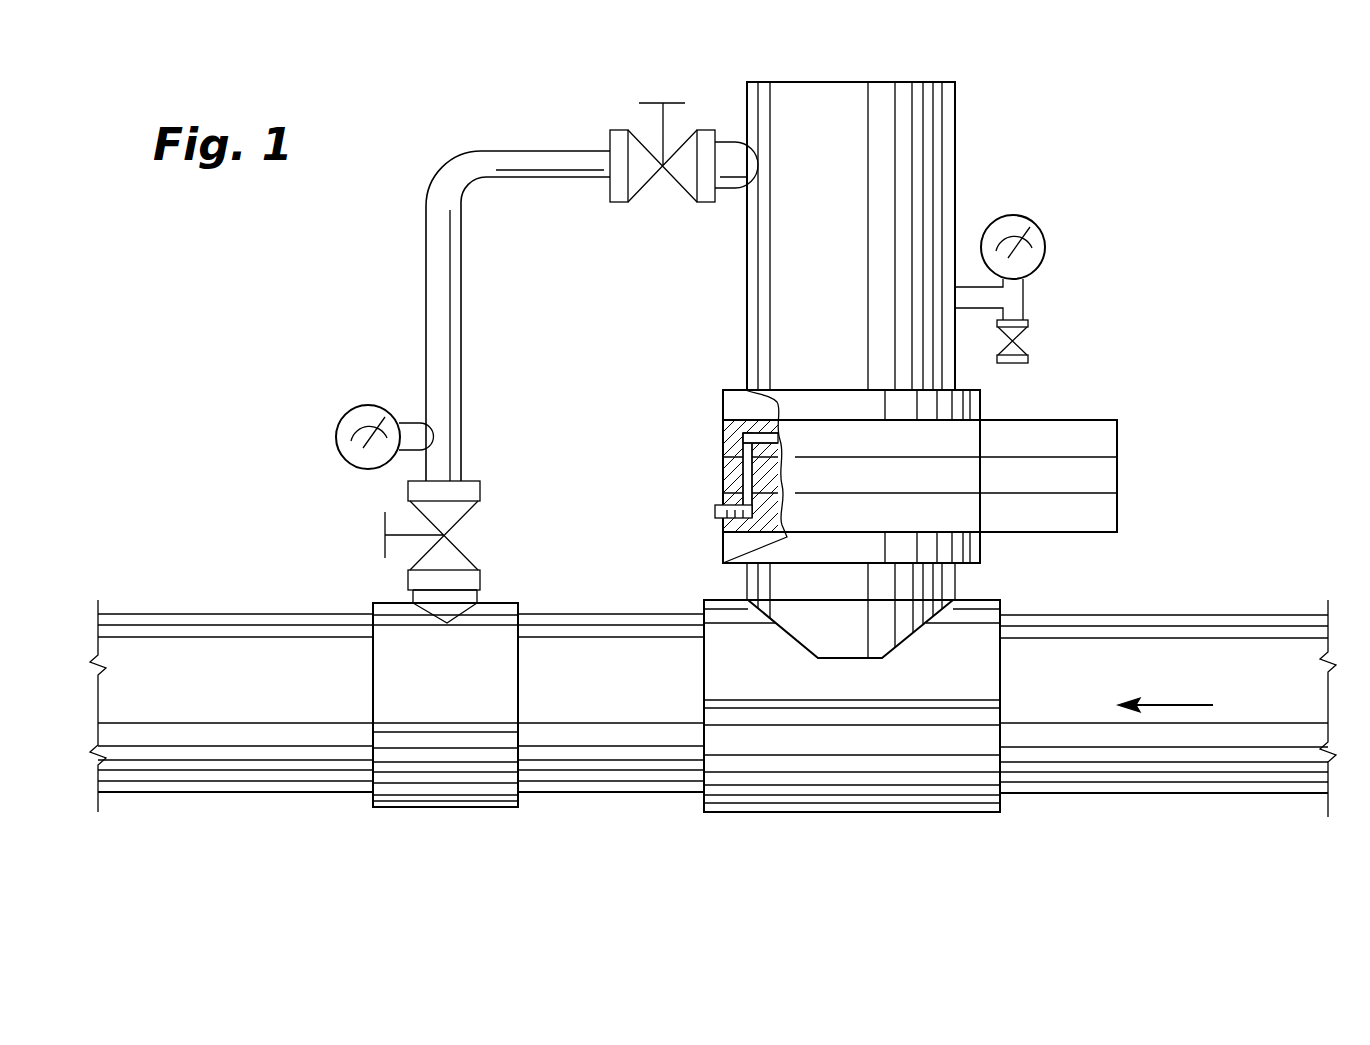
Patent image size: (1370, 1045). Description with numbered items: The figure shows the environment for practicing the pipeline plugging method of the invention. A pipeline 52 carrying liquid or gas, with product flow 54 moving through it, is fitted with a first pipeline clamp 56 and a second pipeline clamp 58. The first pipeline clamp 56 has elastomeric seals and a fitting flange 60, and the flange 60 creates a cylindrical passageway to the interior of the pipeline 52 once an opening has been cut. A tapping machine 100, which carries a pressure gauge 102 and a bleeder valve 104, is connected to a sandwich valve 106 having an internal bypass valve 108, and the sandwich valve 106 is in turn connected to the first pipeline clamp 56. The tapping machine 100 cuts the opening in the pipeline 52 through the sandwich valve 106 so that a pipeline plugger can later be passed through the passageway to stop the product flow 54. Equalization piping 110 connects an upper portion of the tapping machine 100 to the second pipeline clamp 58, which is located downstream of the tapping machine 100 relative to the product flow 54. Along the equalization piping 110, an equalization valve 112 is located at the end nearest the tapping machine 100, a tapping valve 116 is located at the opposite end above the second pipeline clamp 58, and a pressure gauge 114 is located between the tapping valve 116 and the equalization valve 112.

The pipeline 52 is at (237, 667).
The product flow 54 is at (1163, 703).
The pipeline clamp 56 is at (900, 775).
The second pipeline clamp 58 is at (440, 772).
The flange 60 is at (955, 548).
The tapping machine 100 is at (900, 135).
The pressure gauge 102 is at (1025, 243).
The bleeder valve 104 is at (1022, 333).
The sandwich valve 106 is at (1105, 480).
The internal bypass valve 108 is at (715, 507).
The equalization piping 110 is at (378, 283).
The equalization valve 112 is at (617, 135).
The pressure gauge 114 is at (350, 418).
The tapping valve 116 is at (383, 528).